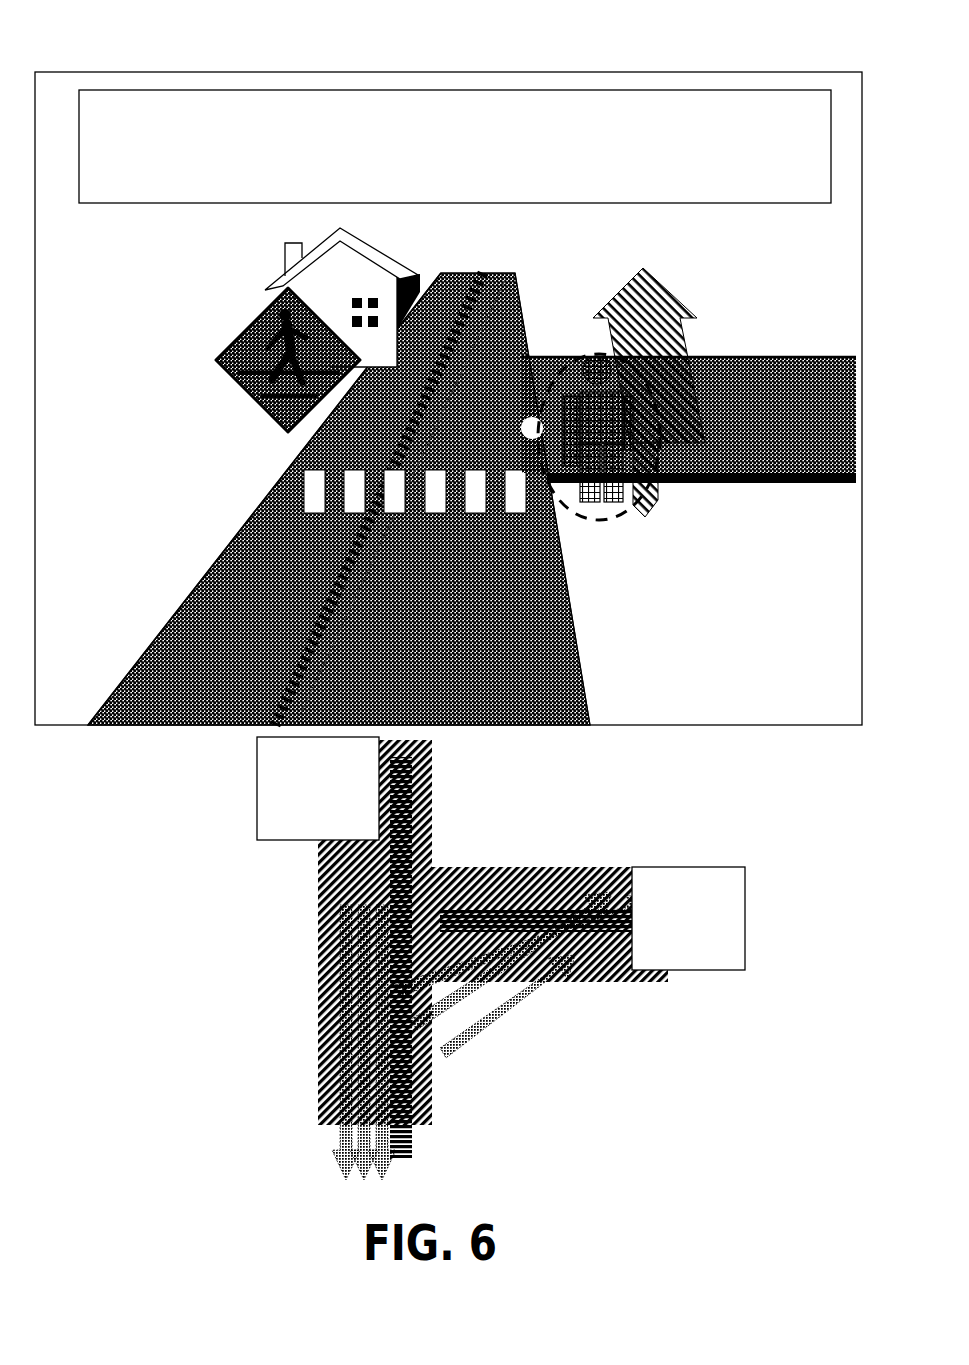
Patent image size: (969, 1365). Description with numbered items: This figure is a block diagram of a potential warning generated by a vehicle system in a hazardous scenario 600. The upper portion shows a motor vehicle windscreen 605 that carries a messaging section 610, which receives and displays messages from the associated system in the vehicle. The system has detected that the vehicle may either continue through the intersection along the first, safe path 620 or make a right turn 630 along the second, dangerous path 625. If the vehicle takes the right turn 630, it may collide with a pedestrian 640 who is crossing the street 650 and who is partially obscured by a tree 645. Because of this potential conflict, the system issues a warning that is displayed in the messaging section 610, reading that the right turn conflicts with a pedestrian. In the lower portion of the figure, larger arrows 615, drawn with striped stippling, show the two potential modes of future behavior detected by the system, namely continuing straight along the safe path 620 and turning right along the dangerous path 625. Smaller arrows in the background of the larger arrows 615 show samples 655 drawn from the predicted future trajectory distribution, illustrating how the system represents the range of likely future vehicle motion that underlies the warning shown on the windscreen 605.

The hazardous scenario 600 is at (448, 394).
The windscreen 605 is at (217, 72).
The messaging section 610 is at (455, 146).
The larger arrows 615 is at (410, 1128).
The path 1 safe 620 is at (318, 788).
The path 2 danger 625 is at (688, 918).
The right turn 630 is at (436, 729).
The pedestrian 640 is at (605, 522).
The tree 645 is at (650, 282).
The street 650 is at (192, 717).
The samples 655 is at (318, 990).